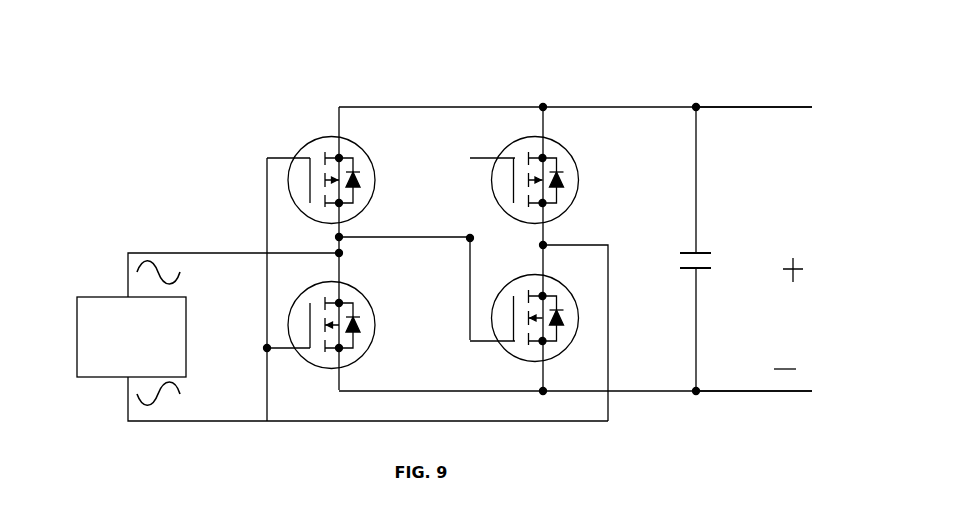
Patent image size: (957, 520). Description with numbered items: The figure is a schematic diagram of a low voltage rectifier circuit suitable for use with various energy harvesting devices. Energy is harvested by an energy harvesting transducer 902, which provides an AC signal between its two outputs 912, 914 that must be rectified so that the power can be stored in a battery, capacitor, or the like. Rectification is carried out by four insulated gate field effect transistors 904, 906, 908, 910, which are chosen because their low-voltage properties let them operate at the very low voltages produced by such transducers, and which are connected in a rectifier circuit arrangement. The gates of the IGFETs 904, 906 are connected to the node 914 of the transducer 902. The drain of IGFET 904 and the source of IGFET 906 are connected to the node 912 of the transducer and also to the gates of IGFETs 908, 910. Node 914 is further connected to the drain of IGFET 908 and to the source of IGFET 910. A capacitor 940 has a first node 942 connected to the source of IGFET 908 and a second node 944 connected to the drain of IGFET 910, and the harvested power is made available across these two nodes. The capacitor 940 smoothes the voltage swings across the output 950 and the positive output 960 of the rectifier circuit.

The energy harvesting transducer 902 is at (77, 336).
The output node 912 is at (127, 278).
The output node 914 is at (127, 398).
The insulated gate field effect transistor 904 is at (313, 138).
The insulated gate field effect transistor 906 is at (362, 288).
The insulated gate field effect transistor 908 is at (576, 160).
The insulated gate field effect transistor 910 is at (563, 278).
The capacitor 940 is at (711, 253).
The first node 942 is at (696, 225).
The second node 944 is at (696, 288).
The positive output 960 is at (783, 107).
The output 950 is at (782, 392).